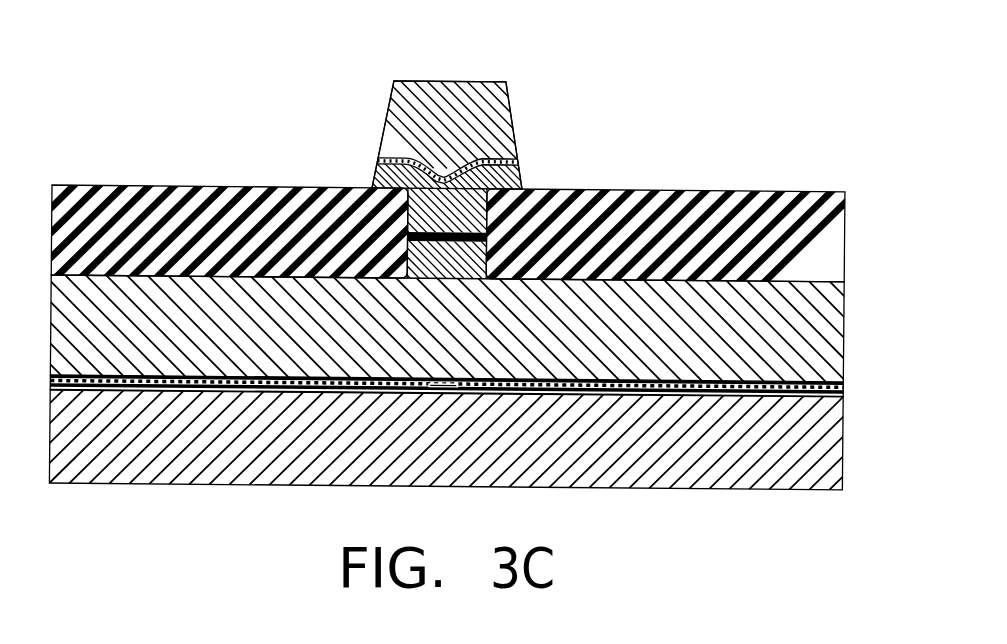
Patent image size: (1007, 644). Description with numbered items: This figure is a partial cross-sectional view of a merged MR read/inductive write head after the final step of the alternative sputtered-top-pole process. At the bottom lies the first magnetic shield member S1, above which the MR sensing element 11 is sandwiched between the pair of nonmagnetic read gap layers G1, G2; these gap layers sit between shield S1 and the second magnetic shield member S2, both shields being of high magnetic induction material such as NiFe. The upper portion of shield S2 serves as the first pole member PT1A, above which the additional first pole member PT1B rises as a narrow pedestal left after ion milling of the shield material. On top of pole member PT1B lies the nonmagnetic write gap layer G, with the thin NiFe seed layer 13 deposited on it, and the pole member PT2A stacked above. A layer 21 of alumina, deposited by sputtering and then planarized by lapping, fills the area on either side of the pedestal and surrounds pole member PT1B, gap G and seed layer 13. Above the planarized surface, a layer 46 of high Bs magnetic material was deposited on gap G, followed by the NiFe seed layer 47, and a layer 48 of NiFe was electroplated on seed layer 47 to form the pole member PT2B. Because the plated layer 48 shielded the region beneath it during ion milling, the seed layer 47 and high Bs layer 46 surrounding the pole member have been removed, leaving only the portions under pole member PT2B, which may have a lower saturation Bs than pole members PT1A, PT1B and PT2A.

The layer of alumina 21 is at (77, 203).
The plated NiFe layer 48 is at (493, 91).
The NiFe seed layer 47 is at (516, 158).
The high Bs magnetic layer 46 is at (503, 170).
The NiFe seed layer 13 is at (489, 226).
The write gap layer G is at (499, 234).
The MR sensing element 11 is at (447, 391).
The read gap layer G1 is at (843, 376).
The read gap layer G2 is at (843, 387).
The first magnetic shield member S1 is at (703, 441).
The second magnetic shield member S2 is at (703, 340).
The first pole member PT1A is at (475, 330).
The additional first pole member PT1B is at (477, 268).
The pole member PT2A is at (477, 208).
The pole member PT2B is at (477, 127).